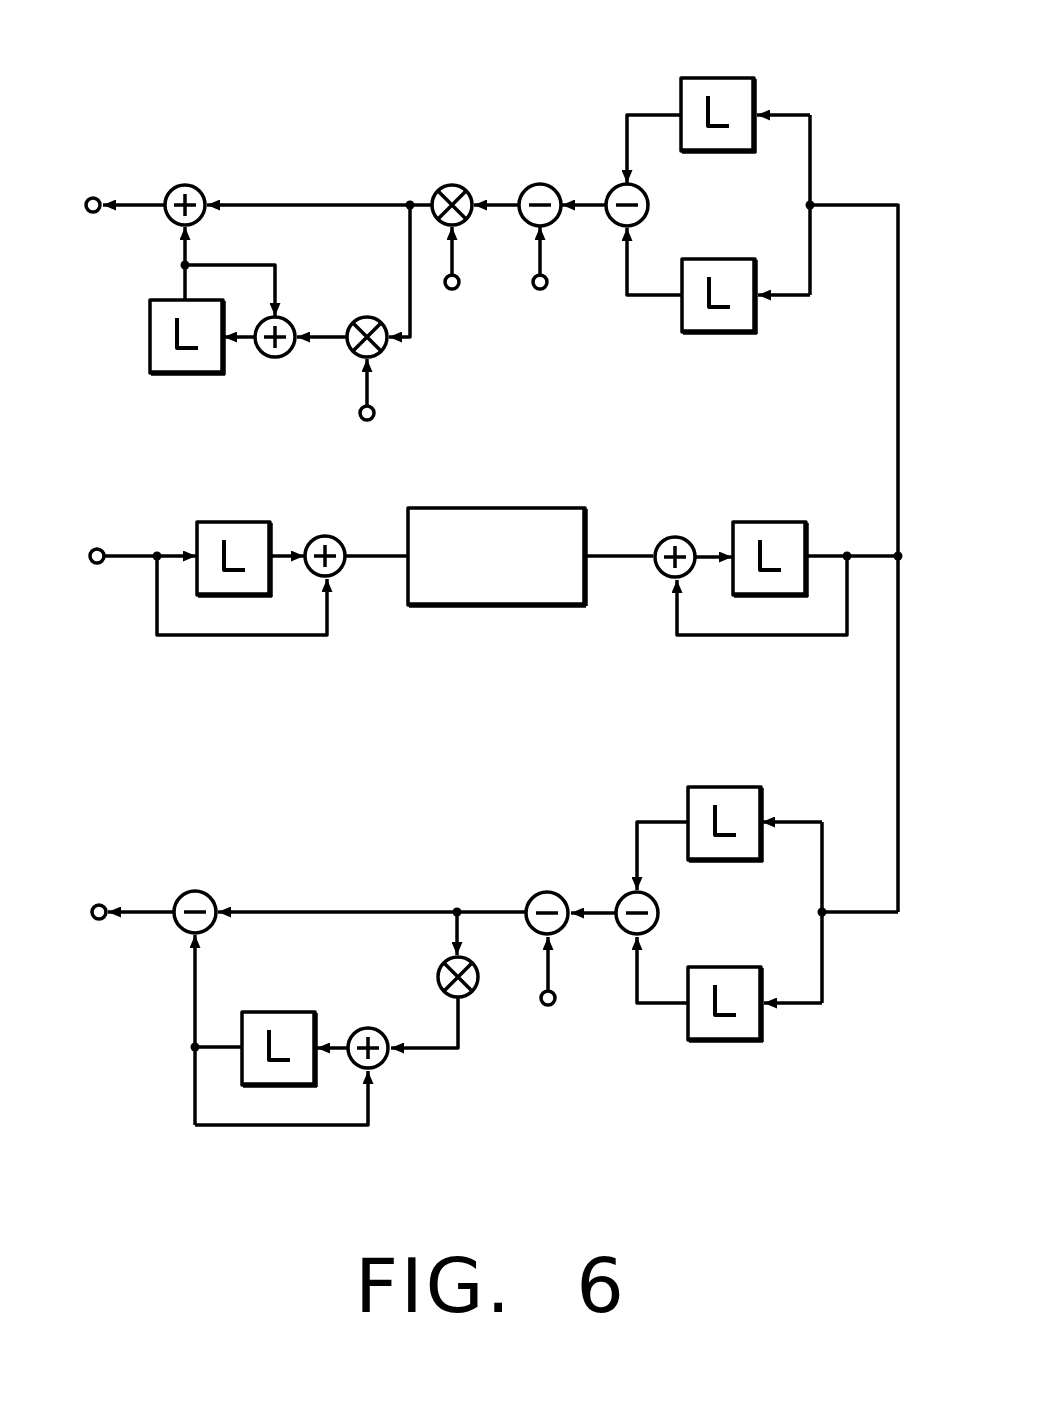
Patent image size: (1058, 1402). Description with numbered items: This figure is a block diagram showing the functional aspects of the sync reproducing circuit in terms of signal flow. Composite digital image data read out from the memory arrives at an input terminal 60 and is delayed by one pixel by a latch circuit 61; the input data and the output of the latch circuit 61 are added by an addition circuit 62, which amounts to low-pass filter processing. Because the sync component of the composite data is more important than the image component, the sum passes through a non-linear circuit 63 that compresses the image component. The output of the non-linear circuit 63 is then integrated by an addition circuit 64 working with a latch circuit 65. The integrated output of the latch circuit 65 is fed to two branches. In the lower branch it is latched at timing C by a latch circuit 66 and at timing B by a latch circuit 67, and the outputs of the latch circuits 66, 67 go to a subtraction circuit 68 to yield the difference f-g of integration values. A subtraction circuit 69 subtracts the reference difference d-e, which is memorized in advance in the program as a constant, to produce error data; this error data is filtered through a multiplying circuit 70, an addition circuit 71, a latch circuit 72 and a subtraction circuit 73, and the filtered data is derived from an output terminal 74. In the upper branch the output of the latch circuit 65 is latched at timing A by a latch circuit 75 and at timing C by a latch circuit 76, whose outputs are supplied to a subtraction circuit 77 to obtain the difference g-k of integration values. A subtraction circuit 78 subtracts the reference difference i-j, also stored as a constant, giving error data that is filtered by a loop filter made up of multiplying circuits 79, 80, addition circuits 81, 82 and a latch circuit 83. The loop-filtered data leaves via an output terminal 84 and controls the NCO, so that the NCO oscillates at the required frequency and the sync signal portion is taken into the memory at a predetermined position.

The input terminal 60 is at (97, 548).
The latch circuit 61 is at (232, 521).
The addition circuit 62 is at (325, 535).
The non-linear circuit 63 is at (500, 508).
The addition circuit 64 is at (677, 536).
The latch circuit 65 is at (768, 522).
The latch circuit 66 is at (735, 787).
The latch circuit 67 is at (725, 1042).
The subtraction circuit 68 is at (660, 913).
The subtraction circuit 69 is at (547, 891).
The multiplying circuit 70 is at (474, 993).
The addition circuit 71 is at (368, 1027).
The latch circuit 72 is at (280, 1012).
The subtraction circuit 73 is at (195, 891).
The output terminal 74 is at (99, 905).
The latch circuit 75 is at (718, 78).
The latch circuit 76 is at (721, 334).
The subtraction circuit 77 is at (650, 205).
The subtraction circuit 78 is at (540, 183).
The multiplying circuit 79 is at (452, 183).
The multiplying circuit 80 is at (367, 316).
The addition circuit 81 is at (275, 358).
The addition circuit 82 is at (185, 183).
The latch circuit 83 is at (187, 376).
The output terminal 84 is at (93, 195).